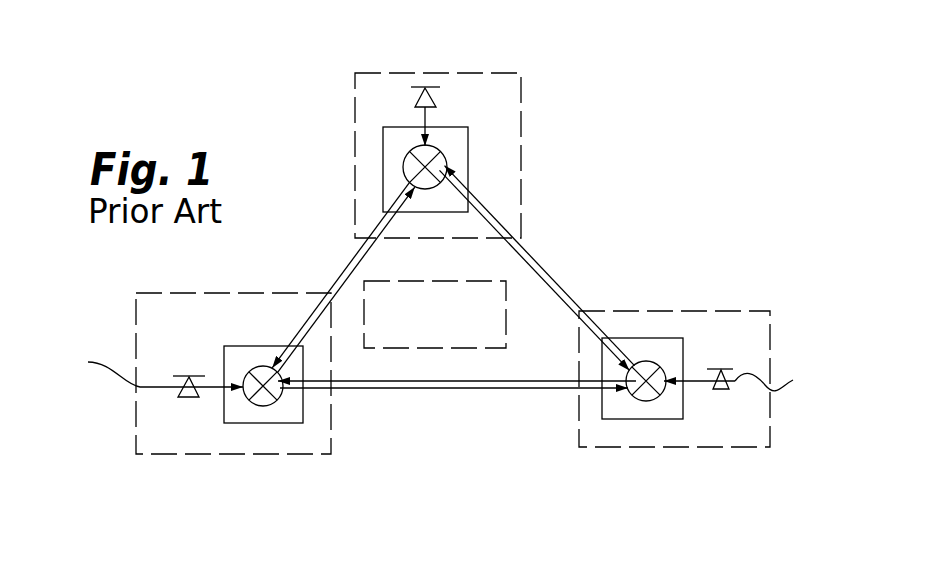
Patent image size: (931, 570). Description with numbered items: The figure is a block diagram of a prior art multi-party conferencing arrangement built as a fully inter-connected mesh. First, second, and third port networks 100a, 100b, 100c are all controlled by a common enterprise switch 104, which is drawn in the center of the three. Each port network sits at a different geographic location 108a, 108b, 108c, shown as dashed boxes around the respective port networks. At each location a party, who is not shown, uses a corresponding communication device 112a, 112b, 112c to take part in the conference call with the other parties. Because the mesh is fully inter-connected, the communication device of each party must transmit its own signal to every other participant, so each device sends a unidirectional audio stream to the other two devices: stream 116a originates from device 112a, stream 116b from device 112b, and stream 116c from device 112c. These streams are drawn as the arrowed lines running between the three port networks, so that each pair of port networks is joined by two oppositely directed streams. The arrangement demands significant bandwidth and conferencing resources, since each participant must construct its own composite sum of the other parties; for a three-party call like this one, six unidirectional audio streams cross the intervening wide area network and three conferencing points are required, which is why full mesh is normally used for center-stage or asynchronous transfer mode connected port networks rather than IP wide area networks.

The first port network 100a is at (650, 420).
The second port network 100b is at (440, 127).
The third port network 100c is at (235, 423).
The enterprise switch 104 is at (446, 350).
The geographic location 108a is at (710, 448).
The geographic location 108b is at (521, 137).
The geographic location 108c is at (157, 455).
The communication device 112a is at (761, 382).
The communication device 112b is at (410, 87).
The communication device 112c is at (135, 371).
The unidirectional audio stream 116a is at (547, 281).
The unidirectional audio stream 116b is at (354, 258).
The unidirectional audio stream 116c is at (362, 259).